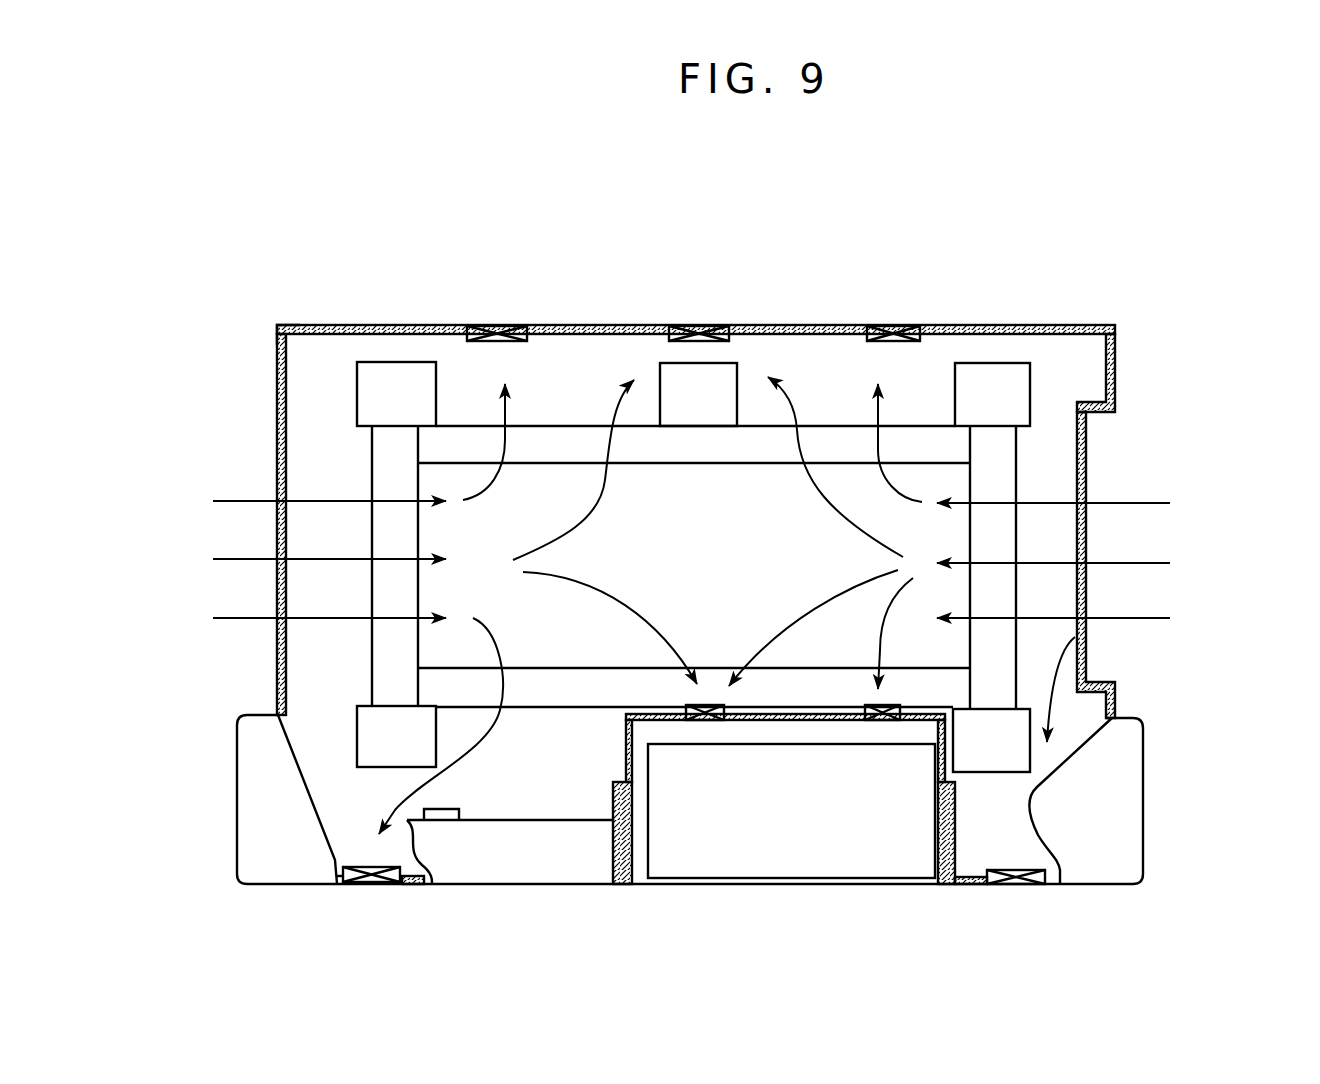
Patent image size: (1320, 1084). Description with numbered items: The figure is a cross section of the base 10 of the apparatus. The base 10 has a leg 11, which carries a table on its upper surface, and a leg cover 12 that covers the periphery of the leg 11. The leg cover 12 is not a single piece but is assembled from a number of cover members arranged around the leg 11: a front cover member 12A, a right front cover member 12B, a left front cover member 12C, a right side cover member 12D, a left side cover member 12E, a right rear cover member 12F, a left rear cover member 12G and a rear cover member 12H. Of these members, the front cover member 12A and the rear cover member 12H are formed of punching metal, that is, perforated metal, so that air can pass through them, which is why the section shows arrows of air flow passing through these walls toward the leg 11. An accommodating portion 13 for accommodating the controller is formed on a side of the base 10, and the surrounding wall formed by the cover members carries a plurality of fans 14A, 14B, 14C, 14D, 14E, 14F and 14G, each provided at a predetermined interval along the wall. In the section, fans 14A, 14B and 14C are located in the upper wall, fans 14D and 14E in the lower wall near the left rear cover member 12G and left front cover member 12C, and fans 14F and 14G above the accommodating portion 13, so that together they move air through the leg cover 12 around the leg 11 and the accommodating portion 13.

The base 10 is at (1224, 241).
The leg 11 is at (390, 377).
The leg cover 12 is at (1136, 314).
The front cover member 12A is at (1086, 452).
The right front cover member 12B is at (1115, 353).
The left front cover member 12C is at (1120, 885).
The right side cover member 12D is at (786, 326).
The left side cover member 12E is at (420, 884).
The right rear cover member 12F is at (283, 326).
The left rear cover member 12G is at (253, 884).
The rear cover member 12H is at (277, 451).
The accommodating portion 13 is at (626, 746).
The fan 14A is at (903, 326).
The fan 14B is at (690, 326).
The fan 14C is at (500, 326).
The fan 14D is at (1010, 885).
The fan 14E is at (367, 884).
The fan 14F is at (870, 705).
The fan 14G is at (690, 705).